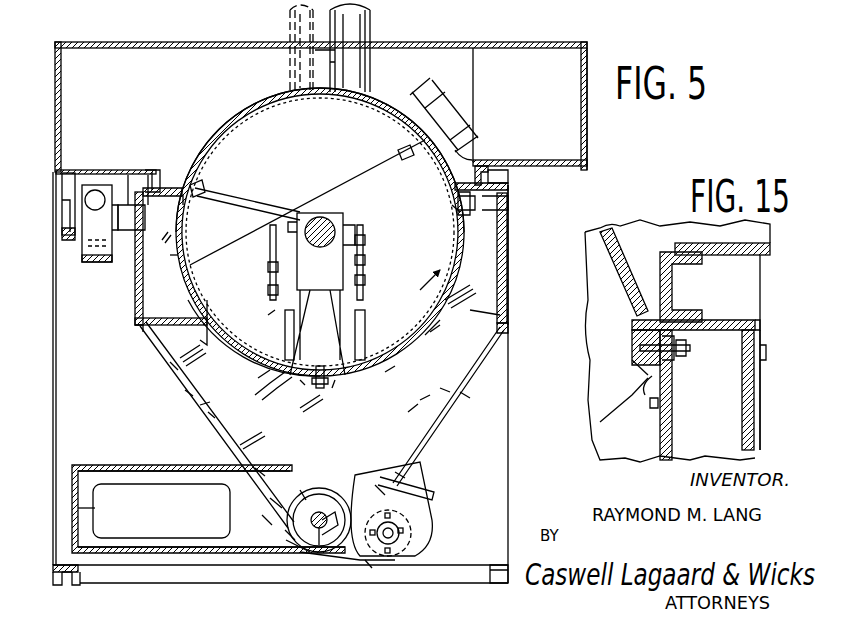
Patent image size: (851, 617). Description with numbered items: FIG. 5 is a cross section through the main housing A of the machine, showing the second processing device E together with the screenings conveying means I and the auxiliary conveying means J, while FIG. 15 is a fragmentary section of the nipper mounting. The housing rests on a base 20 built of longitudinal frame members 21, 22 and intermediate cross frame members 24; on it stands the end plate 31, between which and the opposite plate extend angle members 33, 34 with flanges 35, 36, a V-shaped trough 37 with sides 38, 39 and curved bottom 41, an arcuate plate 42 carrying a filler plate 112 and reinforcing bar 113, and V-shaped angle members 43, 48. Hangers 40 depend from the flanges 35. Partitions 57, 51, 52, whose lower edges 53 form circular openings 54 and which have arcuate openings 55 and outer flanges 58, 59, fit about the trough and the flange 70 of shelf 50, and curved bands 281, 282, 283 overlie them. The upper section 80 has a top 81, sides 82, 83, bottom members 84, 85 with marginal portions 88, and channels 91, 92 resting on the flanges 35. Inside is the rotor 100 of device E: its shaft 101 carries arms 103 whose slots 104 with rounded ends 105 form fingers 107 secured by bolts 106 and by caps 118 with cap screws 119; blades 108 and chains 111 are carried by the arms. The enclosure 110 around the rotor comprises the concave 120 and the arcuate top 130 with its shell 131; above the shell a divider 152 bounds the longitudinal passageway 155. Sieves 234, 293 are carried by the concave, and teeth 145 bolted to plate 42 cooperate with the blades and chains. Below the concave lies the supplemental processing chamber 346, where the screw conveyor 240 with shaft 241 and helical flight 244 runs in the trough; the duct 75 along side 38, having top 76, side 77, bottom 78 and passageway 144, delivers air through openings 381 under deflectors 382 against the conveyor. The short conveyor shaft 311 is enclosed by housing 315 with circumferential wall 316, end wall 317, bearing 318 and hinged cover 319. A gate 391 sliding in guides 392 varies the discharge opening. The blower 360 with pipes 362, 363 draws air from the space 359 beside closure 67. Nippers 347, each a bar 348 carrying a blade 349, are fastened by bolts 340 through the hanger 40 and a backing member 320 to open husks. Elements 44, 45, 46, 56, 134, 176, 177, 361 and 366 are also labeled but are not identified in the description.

In FIG. 5, the base 20 is at (52, 575).
In FIG. 5, the longitudinal frame member 21 is at (82, 575).
In FIG. 5, the longitudinal frame member 22 is at (490, 570).
In FIG. 5, the intermediate cross frame member 24 is at (275, 580).
In FIG. 5, the end plate 31 is at (495, 445).
In FIG. 5, the angle member 33 is at (148, 172).
In FIG. 5, the angle member 34 is at (508, 186).
In FIG. 15, the angle member 34 is at (760, 327).
In FIG. 5, the flange 35 is at (500, 172).
In FIG. 15, the flange 35 is at (715, 320).
In FIG. 5, the flange 36 is at (510, 209).
In FIG. 15, the flange 36 is at (757, 372).
In FIG. 5, the V-shaped trough 37 is at (400, 473).
In FIG. 5, the side of trough 38 is at (262, 515).
In FIG. 5, the side of trough 39 is at (375, 492).
In FIG. 5, the hanger 40 is at (185, 200).
In FIG. 15, the hanger 40 is at (648, 395).
In FIG. 5, the curved bottom of trough 41 is at (312, 556).
In FIG. 5, the arcuate plate 42 is at (316, 390).
In FIG. 5, the V-shaped angle member 43 is at (495, 323).
In FIG. 5, the hopper wall 44 is at (473, 388).
In FIG. 5, the frame plate 45 is at (508, 258).
In FIG. 15, the frame plate 45 is at (762, 412).
In FIG. 5, the hopper side 46 is at (450, 394).
In FIG. 5, the V-shaped angle member 48 is at (135, 322).
In FIG. 5, the shelf 50 is at (162, 340).
In FIG. 5, the partition 51 is at (186, 398).
In FIG. 5, the partition 52 is at (509, 318).
In FIG. 5, the lower end of partition 53 is at (315, 490).
In FIG. 5, the circular opening 54 is at (300, 490).
In FIG. 5, the arcuate opening 55 is at (390, 376).
In FIG. 5, the hopper lining 56 is at (207, 416).
In FIG. 5, the partition 57 is at (67, 347).
In FIG. 5, the flange of partition 58 is at (507, 236).
In FIG. 15, the flange of partition 58 is at (678, 412).
In FIG. 5, the flange of partition 59 is at (195, 410).
In FIG. 5, the closure 67 is at (135, 305).
In FIG. 5, the flange of shelf 70 is at (208, 340).
In FIG. 5, the duct 75 is at (78, 465).
In FIG. 5, the top of duct 76 is at (135, 468).
In FIG. 5, the side of duct 77 is at (78, 508).
In FIG. 5, the bottom of duct 78 is at (190, 548).
In FIG. 5, the upper section 80 is at (590, 46).
In FIG. 5, the top 81 is at (520, 42).
In FIG. 5, the side 82 is at (58, 115).
In FIG. 5, the side 83 is at (590, 130).
In FIG. 5, the bottom member 84 is at (70, 172).
In FIG. 5, the bottom member 85 is at (575, 170).
In FIG. 15, the bottom member 85 is at (755, 262).
In FIG. 5, the marginal portion 88 is at (465, 180).
In FIG. 15, the marginal portion 88 is at (655, 304).
In FIG. 5, the channel 91 is at (153, 172).
In FIG. 5, the channel 92 is at (485, 172).
In FIG. 15, the channel 92 is at (688, 243).
In FIG. 5, the rotor 100 is at (300, 200).
In FIG. 5, the shaft 101 is at (320, 212).
In FIG. 5, the arm 103 is at (255, 200).
In FIG. 5, the slot 104 is at (270, 267).
In FIG. 5, the rounded end 105 is at (270, 289).
In FIG. 5, the bolt 106 is at (360, 240).
In FIG. 5, the finger 107 is at (272, 255).
In FIG. 5, the blade 108 is at (265, 185).
In FIG. 5, the enclosure 110 is at (237, 112).
In FIG. 15, the enclosure 110 is at (623, 278).
In FIG. 5, the chain 111 is at (368, 272).
In FIG. 5, the filler plate 112 is at (321, 386).
In FIG. 5, the reinforcing bar 113 is at (328, 412).
In FIG. 5, the cap 118 is at (308, 215).
In FIG. 5, the cap screw 119 is at (330, 200).
In FIG. 5, the concave 120 is at (413, 350).
In FIG. 5, the arcuate top 130 is at (376, 102).
In FIG. 5, the shell 131 is at (212, 130).
In FIG. 5, the feed tube 134 is at (438, 128).
In FIG. 5, the passageway 144 is at (116, 486).
In FIG. 5, the tooth 145 is at (300, 366).
In FIG. 5, the divider 152 is at (460, 62).
In FIG. 5, the longitudinal passageway 155 is at (452, 130).
In FIG. 5, the pipe 176 is at (288, 28).
In FIG. 5, the pipe 177 is at (360, 30).
In FIG. 5, the sieve 234 is at (345, 120).
In FIG. 5, the screw conveyor 240 is at (288, 546).
In FIG. 5, the shaft 241 is at (322, 528).
In FIG. 5, the helical conveyor flight 244 is at (325, 500).
In FIG. 5, the curved band 281 is at (178, 256).
In FIG. 5, the curved band 282 is at (275, 316).
In FIG. 5, the curved band 283 is at (425, 336).
In FIG. 5, the sieve 293 is at (374, 362).
In FIG. 5, the shaft 311 is at (390, 540).
In FIG. 5, the housing 315 is at (412, 530).
In FIG. 5, the circumferential wall 316 is at (407, 560).
In FIG. 5, the end wall 317 is at (420, 512).
In FIG. 5, the bearing 318 is at (410, 545).
In FIG. 5, the cover 319 is at (435, 498).
In FIG. 15, the backing member 320 is at (670, 362).
In FIG. 15, the bolt 340 is at (680, 352).
In FIG. 5, the supplemental processing chamber 346 is at (183, 376).
In FIG. 15, the nipper 347 is at (632, 345).
In FIG. 15, the bar 348 is at (605, 408).
In FIG. 15, the blade 349 is at (634, 366).
In FIG. 5, the space 359 is at (140, 328).
In FIG. 5, the blower 360 is at (95, 264).
In FIG. 5, the motor base 361 is at (70, 242).
In FIG. 5, the pipe 362 is at (62, 205).
In FIG. 5, the pipe 363 is at (90, 190).
In FIG. 5, the lever 366 is at (65, 230).
In FIG. 5, the opening 381 is at (258, 470).
In FIG. 5, the deflector 382 is at (278, 500).
In FIG. 5, the gate 391 is at (296, 386).
In FIG. 5, the guide 392 is at (417, 402).
In FIG. 5, the main housing A is at (508, 290).
In FIG. 5, the second processing device E is at (365, 185).
In FIG. 5, the conveying means I is at (337, 512).
In FIG. 5, the auxiliary conveying means J is at (372, 570).